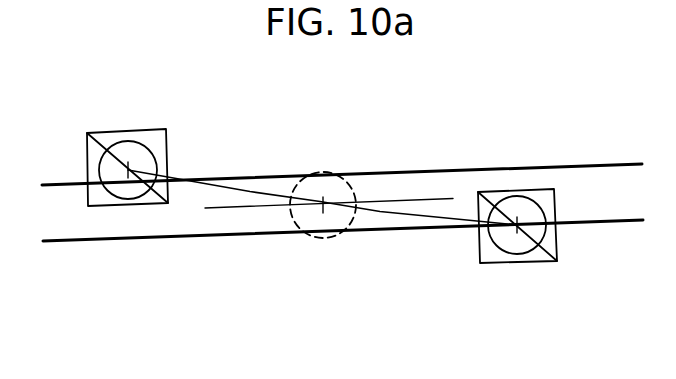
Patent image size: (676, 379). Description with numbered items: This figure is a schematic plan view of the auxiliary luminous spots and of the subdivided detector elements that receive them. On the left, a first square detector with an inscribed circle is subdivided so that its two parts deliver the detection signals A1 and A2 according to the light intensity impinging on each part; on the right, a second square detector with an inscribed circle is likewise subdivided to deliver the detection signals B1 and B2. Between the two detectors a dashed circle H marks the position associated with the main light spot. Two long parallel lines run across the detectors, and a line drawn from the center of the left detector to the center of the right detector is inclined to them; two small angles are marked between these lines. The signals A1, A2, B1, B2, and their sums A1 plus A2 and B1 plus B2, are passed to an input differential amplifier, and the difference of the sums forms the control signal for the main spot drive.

The detection signal A1 is at (155, 140).
The detection signal A2 is at (101, 203).
The detection signal B1 is at (543, 200).
The detection signal B2 is at (510, 263).
The hole / target position H is at (343, 187).